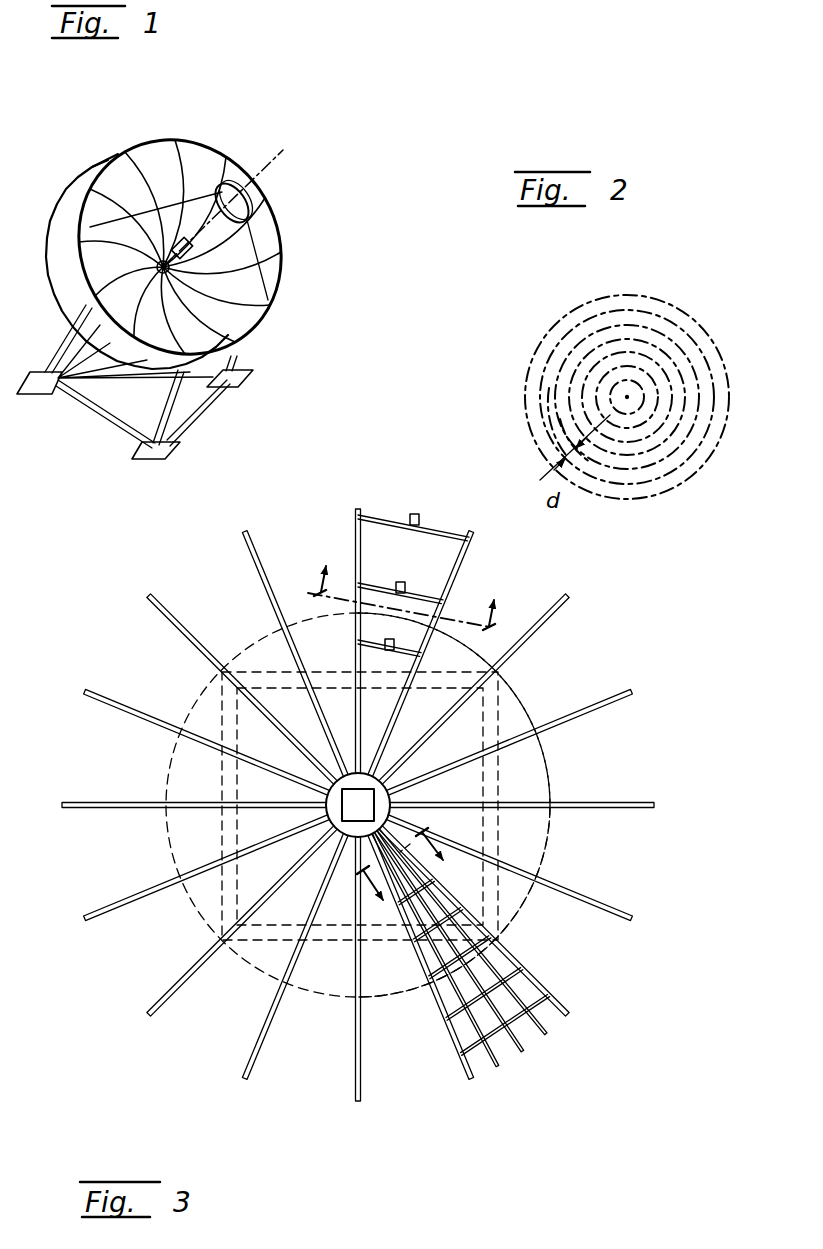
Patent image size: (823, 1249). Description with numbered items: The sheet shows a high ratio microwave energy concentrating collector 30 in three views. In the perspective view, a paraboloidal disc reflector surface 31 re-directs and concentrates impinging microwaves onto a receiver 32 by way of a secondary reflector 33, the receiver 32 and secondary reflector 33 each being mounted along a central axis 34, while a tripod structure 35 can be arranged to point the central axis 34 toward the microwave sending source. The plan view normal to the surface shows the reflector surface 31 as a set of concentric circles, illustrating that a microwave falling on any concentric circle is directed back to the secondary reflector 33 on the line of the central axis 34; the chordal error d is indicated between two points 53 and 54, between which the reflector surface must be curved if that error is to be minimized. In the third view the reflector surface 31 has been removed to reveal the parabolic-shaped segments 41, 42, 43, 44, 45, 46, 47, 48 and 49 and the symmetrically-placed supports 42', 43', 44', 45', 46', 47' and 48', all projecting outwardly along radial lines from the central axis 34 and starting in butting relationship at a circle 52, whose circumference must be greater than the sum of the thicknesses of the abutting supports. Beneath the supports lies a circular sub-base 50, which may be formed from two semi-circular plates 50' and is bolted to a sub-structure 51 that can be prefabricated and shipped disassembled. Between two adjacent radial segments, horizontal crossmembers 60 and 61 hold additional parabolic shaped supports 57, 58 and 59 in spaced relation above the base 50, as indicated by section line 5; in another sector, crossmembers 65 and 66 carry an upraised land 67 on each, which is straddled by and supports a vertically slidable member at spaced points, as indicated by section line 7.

In FIG. 1, the high ratio microwave energy concentrating collector 30 is at (195, 135).
In FIG. 1, the paraboloidal disc reflector surface 31 is at (127, 168).
In FIG. 2, the paraboloidal disc reflector surface 31 is at (698, 342).
In FIG. 1, the receiver 32 is at (195, 258).
In FIG. 1, the secondary reflector 33 is at (249, 208).
In FIG. 1, the central axis 34 is at (281, 152).
In FIG. 2, the central axis 34 is at (630, 394).
In FIG. 1, the tripod structure 35 is at (62, 362).
In FIG. 3, the parabolic-shaped segment 41 is at (78, 809).
In FIG. 3, the parabolic-shaped segment 42 is at (207, 876).
In FIG. 3, the parabolic-shaped segment 43 is at (242, 924).
In FIG. 3, the parabolic-shaped segment 44 is at (295, 957).
In FIG. 3, the parabolic-shaped segment 45 is at (379, 969).
In FIG. 3, the parabolic-shaped segment 46 is at (421, 958).
In FIG. 3, the parabolic-shaped segment 47 is at (481, 921).
In FIG. 3, the parabolic-shaped segment 48 is at (516, 868).
In FIG. 3, the parabolic-shaped segment 49 is at (643, 806).
In FIG. 3, the symmetrically-placed support 42' is at (207, 725).
In FIG. 3, the symmetrically-placed support 43' is at (242, 675).
In FIG. 3, the symmetrically-placed support 44' is at (295, 641).
In FIG. 3, the symmetrically-placed support 45' is at (358, 623).
In FIG. 3, the symmetrically-placed support 46' is at (447, 633).
In FIG. 3, the symmetrically-placed support 47' is at (494, 689).
In FIG. 3, the symmetrically-placed support 48' is at (518, 742).
In FIG. 3, the circular sub-base 50 is at (339, 805).
In FIG. 3, the semi-circular plate 50' is at (477, 805).
In FIG. 3, the sub-structure 51 is at (224, 818).
In FIG. 3, the circle 52 is at (328, 781).
In FIG. 2, the point 53 is at (552, 417).
In FIG. 2, the point 54 is at (602, 472).
In FIG. 3, the parabolic shaped support 57 is at (547, 1036).
In FIG. 3, the parabolic shaped support 58 is at (522, 1058).
In FIG. 3, the parabolic shaped support 59 is at (495, 1070).
In FIG. 3, the horizontal crossmember 60 is at (554, 1004).
In FIG. 3, the horizontal crossmember 61 is at (456, 917).
In FIG. 3, the crossmember 65 is at (380, 513).
In FIG. 3, the crossmember 66 is at (375, 648).
In FIG. 3, the upraised land 67 is at (418, 522).
In FIG. 3, the section line 5- 5 is at (406, 877).
In FIG. 3, the section line 7- 7 is at (409, 582).